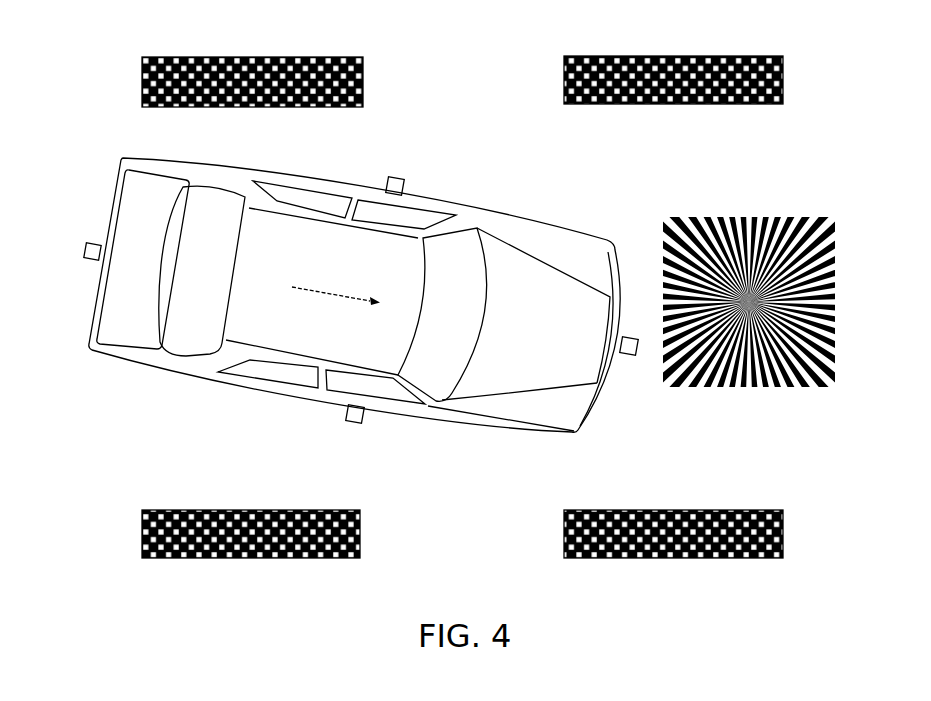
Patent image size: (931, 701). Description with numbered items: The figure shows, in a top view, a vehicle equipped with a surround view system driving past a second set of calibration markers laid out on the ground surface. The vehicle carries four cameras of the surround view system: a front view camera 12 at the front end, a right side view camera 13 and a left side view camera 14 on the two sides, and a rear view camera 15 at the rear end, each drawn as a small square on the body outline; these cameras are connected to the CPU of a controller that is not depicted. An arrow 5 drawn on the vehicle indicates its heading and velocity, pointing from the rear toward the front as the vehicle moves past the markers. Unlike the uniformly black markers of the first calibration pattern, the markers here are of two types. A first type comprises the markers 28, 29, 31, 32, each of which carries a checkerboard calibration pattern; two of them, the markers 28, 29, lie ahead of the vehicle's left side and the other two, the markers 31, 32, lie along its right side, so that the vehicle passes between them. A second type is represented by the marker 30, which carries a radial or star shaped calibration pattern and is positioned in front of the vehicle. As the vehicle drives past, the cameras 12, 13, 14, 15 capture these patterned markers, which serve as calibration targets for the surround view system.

The arrow 5 is at (336, 291).
The front view camera 12 is at (628, 357).
The right side view camera 13 is at (345, 415).
The left side view camera 14 is at (399, 177).
The rear view camera 15 is at (83, 251).
The marker 28 is at (252, 56).
The marker 29 is at (673, 55).
The marker 30 is at (740, 215).
The marker 31 is at (252, 508).
The marker 32 is at (673, 508).